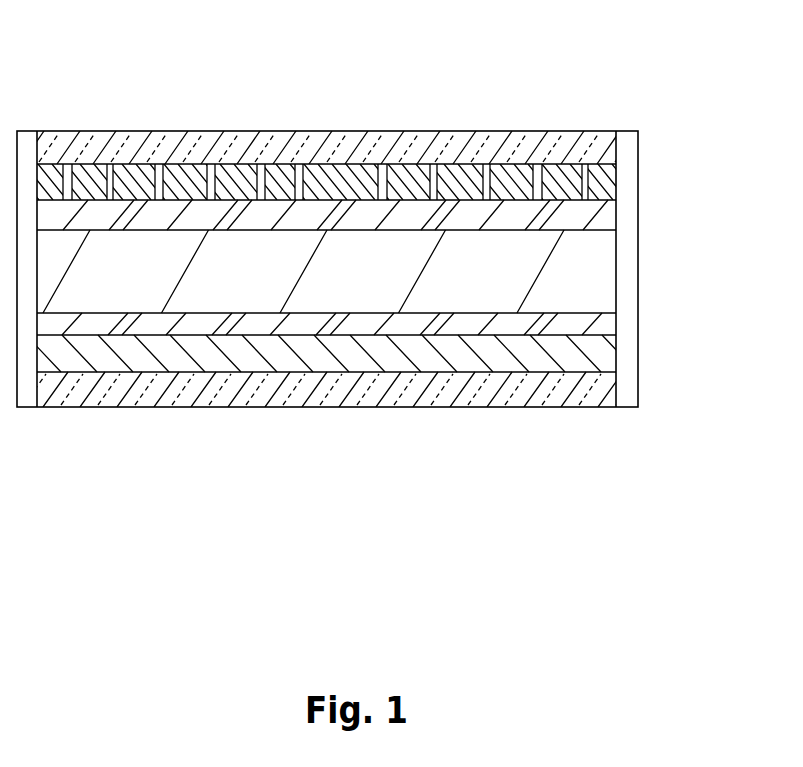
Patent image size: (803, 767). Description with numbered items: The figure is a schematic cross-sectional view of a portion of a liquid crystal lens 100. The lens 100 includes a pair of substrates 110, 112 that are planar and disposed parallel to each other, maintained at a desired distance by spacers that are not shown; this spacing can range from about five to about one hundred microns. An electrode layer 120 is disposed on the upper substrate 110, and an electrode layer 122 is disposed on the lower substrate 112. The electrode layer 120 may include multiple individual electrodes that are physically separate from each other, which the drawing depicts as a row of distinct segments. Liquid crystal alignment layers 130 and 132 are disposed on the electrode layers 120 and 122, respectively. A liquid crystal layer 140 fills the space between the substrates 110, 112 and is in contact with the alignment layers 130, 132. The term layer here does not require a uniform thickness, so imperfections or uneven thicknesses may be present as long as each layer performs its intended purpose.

The liquid crystal lens 100 is at (163, 102).
The upper substrate 110 is at (545, 131).
The lower substrate 112 is at (557, 408).
The electrode layer 120 is at (518, 186).
The electrode layer 122 is at (605, 356).
The liquid crystal alignment layer 130 is at (605, 227).
The liquid crystal alignment layer 132 is at (603, 328).
The liquid crystal layer 140 is at (602, 275).